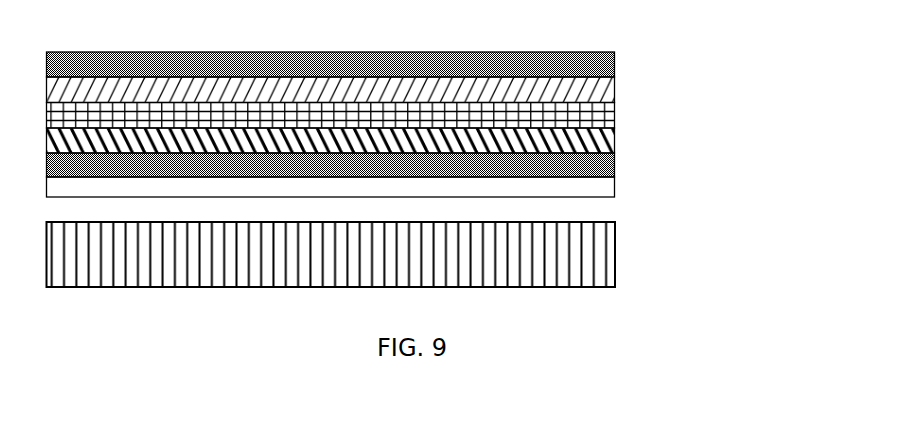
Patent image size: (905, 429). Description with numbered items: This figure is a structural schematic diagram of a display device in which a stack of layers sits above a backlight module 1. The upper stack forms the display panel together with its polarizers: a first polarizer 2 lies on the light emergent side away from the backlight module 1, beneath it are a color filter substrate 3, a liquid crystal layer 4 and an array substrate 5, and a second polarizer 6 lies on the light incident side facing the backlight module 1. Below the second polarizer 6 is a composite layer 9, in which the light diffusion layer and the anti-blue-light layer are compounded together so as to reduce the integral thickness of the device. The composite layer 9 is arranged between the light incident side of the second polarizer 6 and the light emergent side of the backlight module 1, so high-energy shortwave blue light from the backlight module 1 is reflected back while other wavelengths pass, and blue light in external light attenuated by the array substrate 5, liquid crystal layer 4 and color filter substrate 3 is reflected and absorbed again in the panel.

The backlight module 1 is at (526, 261).
The first polarizer 2 is at (513, 64).
The color filter substrate 3 is at (513, 90).
The liquid crystal layer 4 is at (513, 115).
The array substrate 5 is at (513, 140).
The second polarizer 6 is at (513, 165).
The composite layer 9 is at (513, 184).